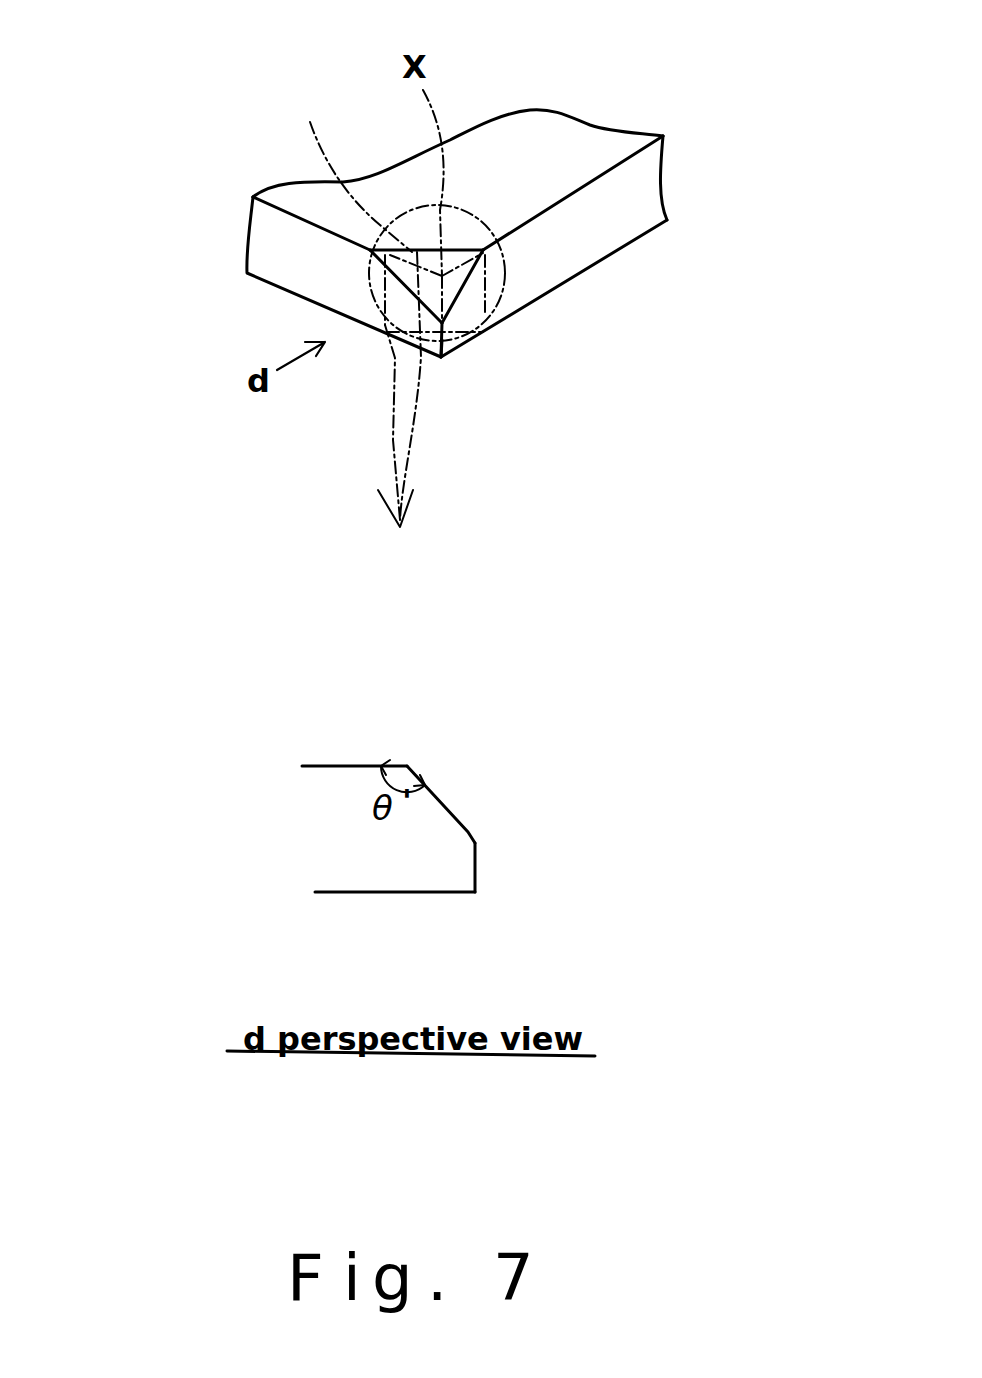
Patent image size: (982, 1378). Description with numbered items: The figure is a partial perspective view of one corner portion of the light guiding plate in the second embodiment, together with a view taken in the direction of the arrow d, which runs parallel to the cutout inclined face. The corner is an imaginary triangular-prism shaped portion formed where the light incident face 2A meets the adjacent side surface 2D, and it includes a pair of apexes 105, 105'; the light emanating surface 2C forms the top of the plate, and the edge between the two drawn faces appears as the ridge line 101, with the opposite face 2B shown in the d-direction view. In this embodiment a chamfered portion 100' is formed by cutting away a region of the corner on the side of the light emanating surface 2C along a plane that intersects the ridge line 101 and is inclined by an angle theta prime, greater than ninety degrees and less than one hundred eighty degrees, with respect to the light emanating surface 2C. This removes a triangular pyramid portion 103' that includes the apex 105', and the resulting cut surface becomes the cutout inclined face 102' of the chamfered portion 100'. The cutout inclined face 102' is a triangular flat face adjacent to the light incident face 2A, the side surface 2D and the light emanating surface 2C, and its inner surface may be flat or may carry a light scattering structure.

The light incident face 2A is at (272, 242).
The second side face of cutting insert 2B is at (628, 243).
The light emanating surface 2C is at (523, 150).
The side surface 2D is at (642, 178).
The chamfered portion 100' is at (395, 326).
The ridge line 101 is at (440, 362).
The cutout inclined face 102' is at (555, 537).
The triangular pyramid portion 103' is at (499, 330).
The apex 105 is at (510, 615).
The apex 105' is at (342, 166).